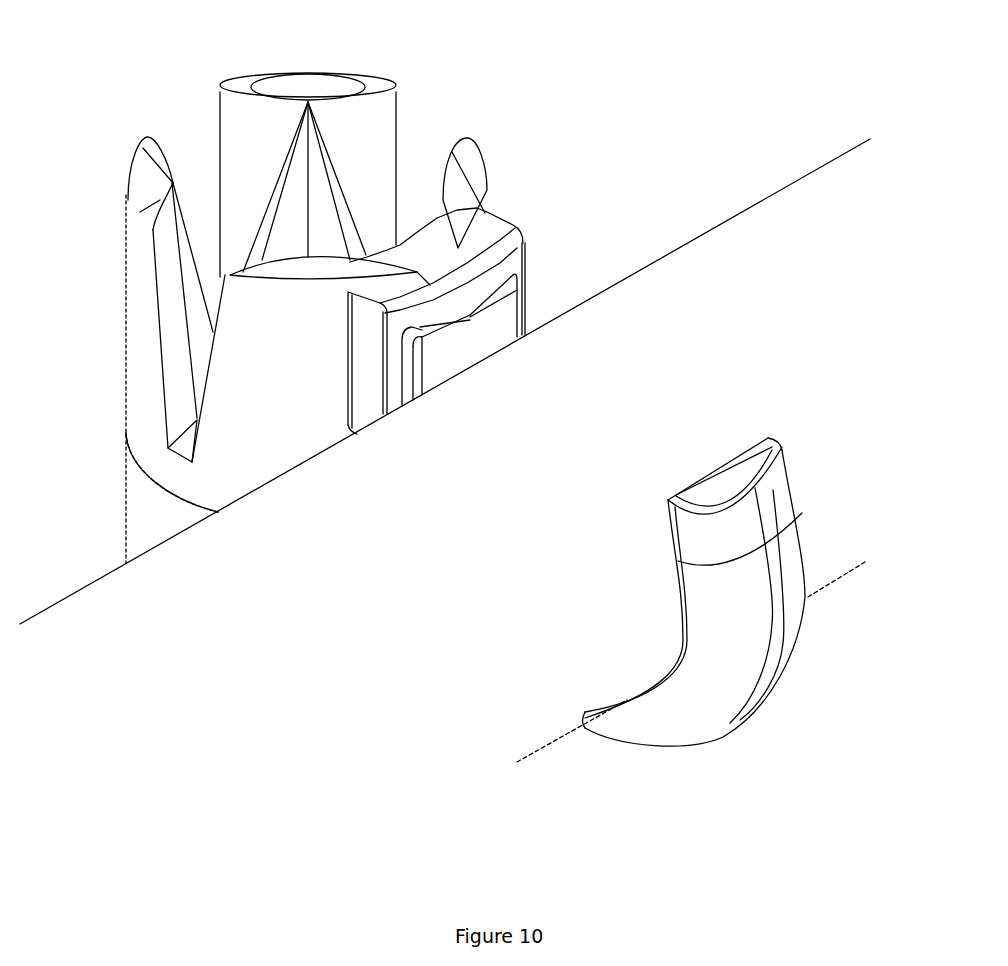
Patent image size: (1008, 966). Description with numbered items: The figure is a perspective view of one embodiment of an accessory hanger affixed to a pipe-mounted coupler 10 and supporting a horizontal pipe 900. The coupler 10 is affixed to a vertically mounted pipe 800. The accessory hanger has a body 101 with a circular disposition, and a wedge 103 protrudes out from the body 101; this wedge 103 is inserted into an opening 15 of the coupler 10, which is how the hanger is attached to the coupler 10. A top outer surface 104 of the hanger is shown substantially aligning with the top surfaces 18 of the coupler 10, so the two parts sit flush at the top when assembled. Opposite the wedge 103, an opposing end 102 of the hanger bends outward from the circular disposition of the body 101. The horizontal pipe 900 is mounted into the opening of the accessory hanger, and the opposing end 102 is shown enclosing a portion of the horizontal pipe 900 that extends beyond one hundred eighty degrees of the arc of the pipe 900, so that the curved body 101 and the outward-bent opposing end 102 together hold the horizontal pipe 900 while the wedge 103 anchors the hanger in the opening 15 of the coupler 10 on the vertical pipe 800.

The pipe-mounted coupler 10 is at (145, 360).
The opening 15 is at (442, 207).
The top surfaces 18 is at (317, 262).
The body 101 is at (677, 708).
The opposing end 102 is at (763, 510).
The wedge 103 is at (410, 243).
The top outer surface 104 is at (423, 257).
The vertically mounted pipe 800 is at (137, 488).
The horizontal pipe 900 is at (477, 742).